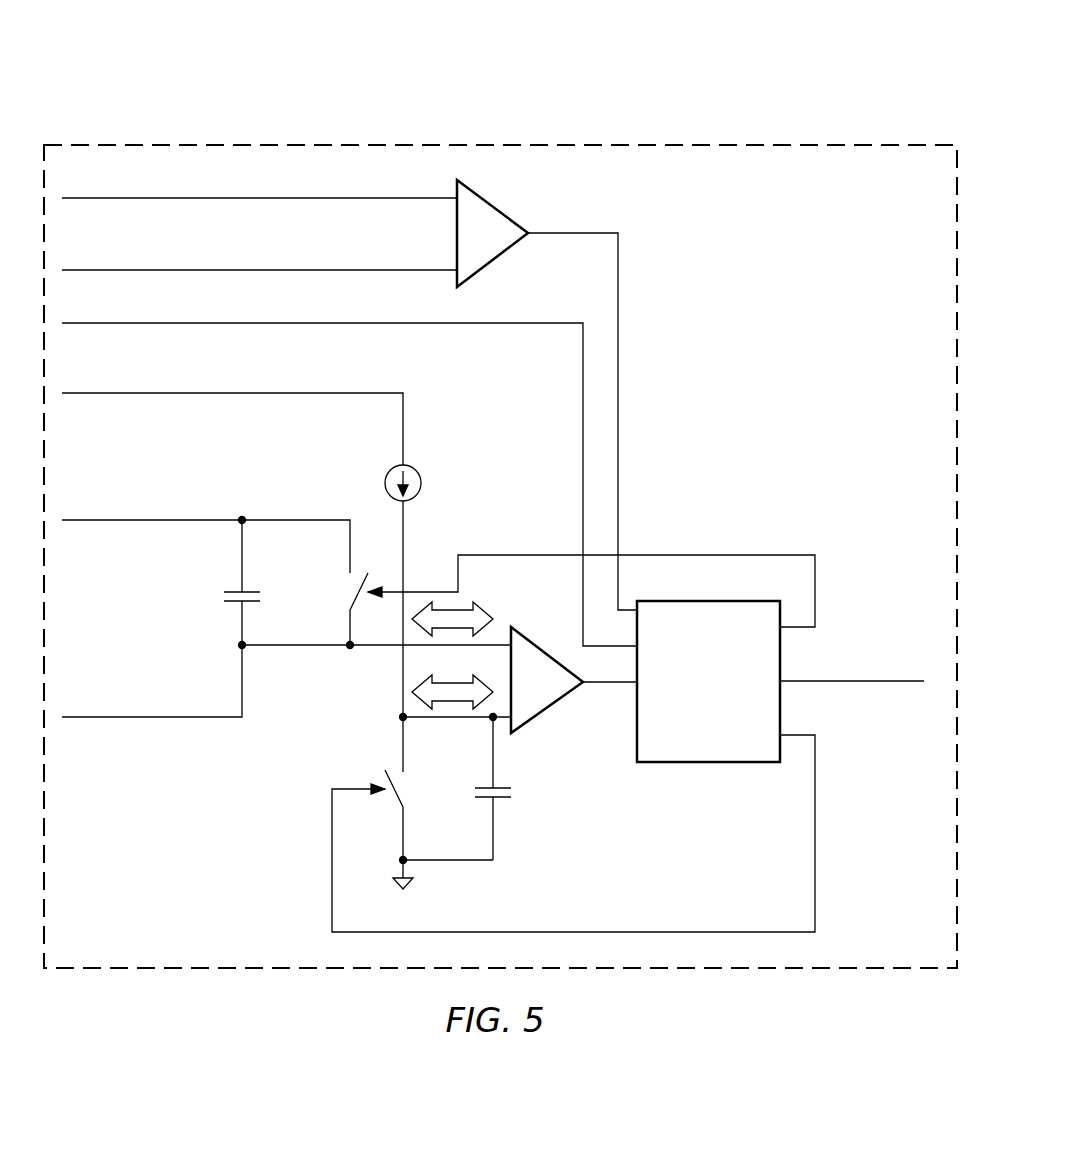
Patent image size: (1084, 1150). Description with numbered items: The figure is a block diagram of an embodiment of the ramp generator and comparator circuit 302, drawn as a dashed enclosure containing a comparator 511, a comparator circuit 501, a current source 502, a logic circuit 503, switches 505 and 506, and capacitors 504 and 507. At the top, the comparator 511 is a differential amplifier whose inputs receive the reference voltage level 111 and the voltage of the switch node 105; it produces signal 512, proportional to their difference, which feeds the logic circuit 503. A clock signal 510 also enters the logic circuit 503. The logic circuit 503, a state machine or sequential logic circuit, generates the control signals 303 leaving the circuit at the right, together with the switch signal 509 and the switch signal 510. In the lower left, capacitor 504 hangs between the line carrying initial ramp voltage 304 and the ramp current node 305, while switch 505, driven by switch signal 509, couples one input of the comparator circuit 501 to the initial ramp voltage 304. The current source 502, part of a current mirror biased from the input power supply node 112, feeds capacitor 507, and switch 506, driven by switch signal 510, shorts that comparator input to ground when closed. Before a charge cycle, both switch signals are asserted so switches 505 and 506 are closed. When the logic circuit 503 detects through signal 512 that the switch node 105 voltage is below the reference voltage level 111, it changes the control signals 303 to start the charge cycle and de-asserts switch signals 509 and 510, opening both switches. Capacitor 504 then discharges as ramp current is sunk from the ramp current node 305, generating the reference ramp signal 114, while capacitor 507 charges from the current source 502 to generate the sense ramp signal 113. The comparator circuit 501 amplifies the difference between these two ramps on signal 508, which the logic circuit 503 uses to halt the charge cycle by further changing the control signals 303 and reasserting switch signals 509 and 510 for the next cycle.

The ramp generator and comparator circuit 302 is at (542, 144).
The reference voltage level 111 is at (259, 187).
The switch node 105 is at (259, 271).
The switch signal 510 is at (639, 932).
The input power supply node 112 is at (232, 418).
The current source 502 is at (385, 483).
The initial ramp voltage 304 is at (206, 523).
The capacitor 504 is at (222, 592).
The switch 505 is at (350, 600).
The ramp current node 305 is at (286, 694).
The comparator circuit 501 is at (550, 708).
The signal 508 is at (597, 683).
The capacitor 507 is at (511, 789).
The switch 506 is at (406, 797).
The comparator 511 is at (500, 258).
The signal 512 is at (568, 235).
The switch signal 509 is at (716, 555).
The logic circuit 503 is at (688, 716).
The control signals 303 is at (852, 669).
The reference ramp signal 114 is at (489, 597).
The sense ramp signal 113 is at (408, 705).